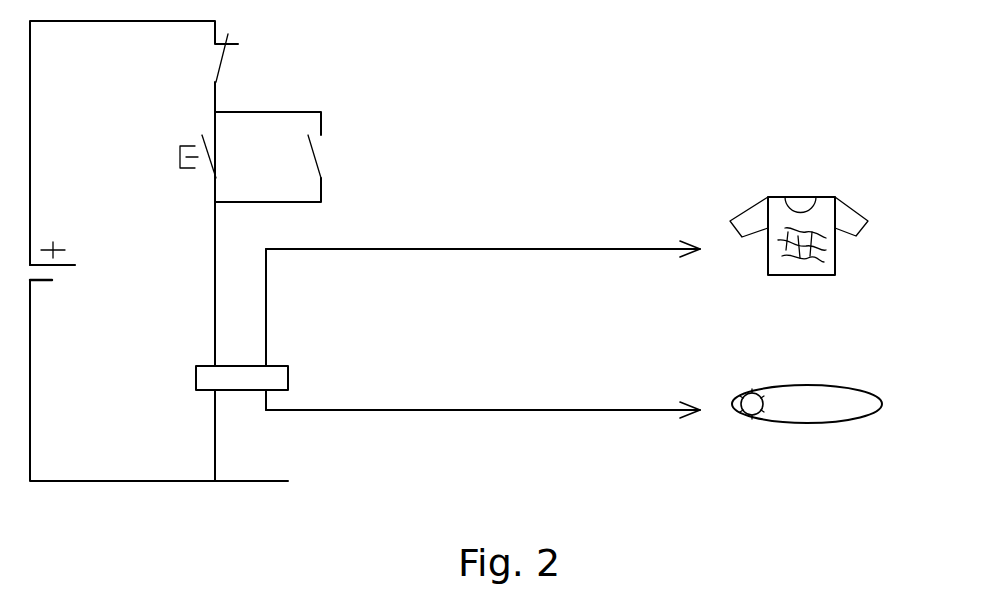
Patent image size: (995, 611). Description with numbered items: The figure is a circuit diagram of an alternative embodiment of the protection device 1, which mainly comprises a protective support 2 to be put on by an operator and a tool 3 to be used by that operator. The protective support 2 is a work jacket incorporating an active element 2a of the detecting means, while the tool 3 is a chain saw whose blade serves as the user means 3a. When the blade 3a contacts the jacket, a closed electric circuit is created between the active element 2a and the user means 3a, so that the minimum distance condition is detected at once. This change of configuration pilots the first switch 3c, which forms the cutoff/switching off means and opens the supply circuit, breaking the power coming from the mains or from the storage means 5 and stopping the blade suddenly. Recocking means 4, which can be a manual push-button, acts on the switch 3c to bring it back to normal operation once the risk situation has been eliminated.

The protection device 1 is at (584, 124).
The protective support 2 is at (758, 256).
The active element 2a is at (810, 258).
The tool 3 is at (744, 434).
The user means 3a is at (855, 387).
The first switch 3c is at (238, 393).
The recocking means 4 is at (325, 90).
The storage means 5 is at (62, 300).